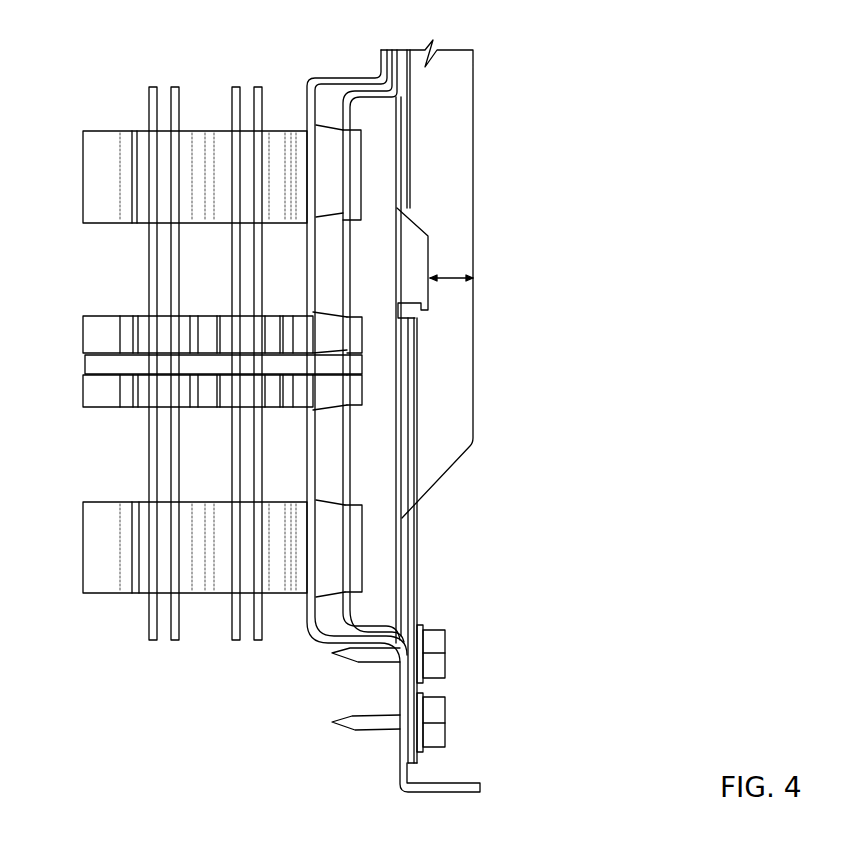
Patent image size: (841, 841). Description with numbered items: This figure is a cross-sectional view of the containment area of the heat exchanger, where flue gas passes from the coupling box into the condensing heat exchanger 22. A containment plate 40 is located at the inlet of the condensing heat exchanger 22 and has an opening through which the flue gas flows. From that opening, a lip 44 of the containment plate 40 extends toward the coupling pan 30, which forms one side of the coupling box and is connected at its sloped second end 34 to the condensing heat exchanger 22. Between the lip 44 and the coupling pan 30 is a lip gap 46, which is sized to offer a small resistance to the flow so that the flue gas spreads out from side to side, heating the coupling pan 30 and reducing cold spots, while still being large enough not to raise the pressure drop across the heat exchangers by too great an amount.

The condensing heat exchanger 22 is at (183, 177).
The coupling pan 30 is at (473, 168).
The containment plate 40 is at (400, 122).
The lip 44 is at (428, 262).
The lip gap 46 is at (452, 281).
The second end 34 is at (445, 730).